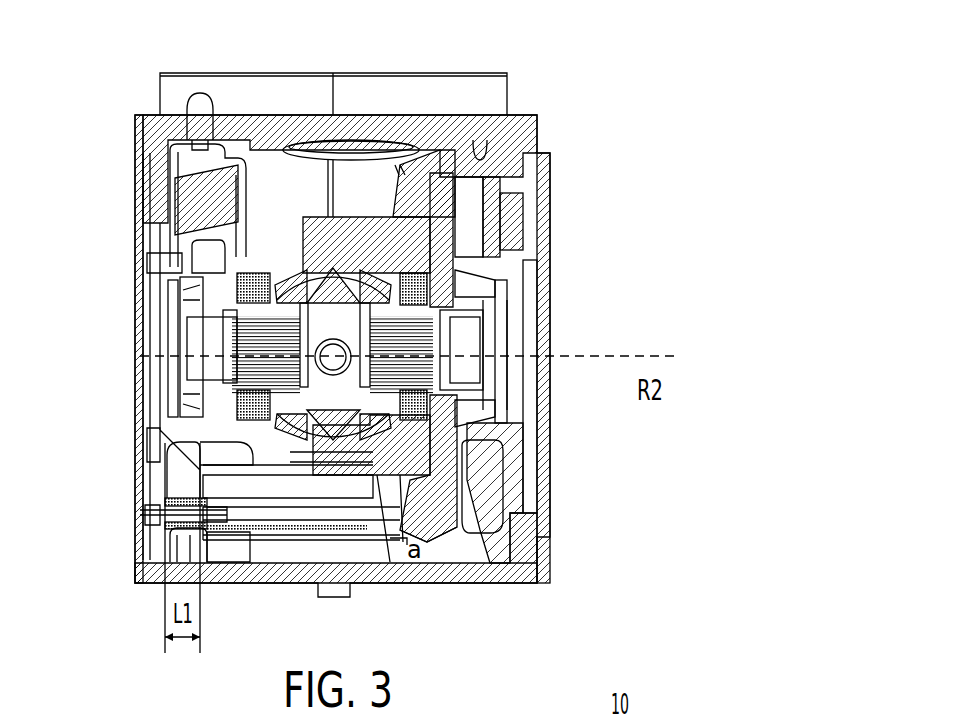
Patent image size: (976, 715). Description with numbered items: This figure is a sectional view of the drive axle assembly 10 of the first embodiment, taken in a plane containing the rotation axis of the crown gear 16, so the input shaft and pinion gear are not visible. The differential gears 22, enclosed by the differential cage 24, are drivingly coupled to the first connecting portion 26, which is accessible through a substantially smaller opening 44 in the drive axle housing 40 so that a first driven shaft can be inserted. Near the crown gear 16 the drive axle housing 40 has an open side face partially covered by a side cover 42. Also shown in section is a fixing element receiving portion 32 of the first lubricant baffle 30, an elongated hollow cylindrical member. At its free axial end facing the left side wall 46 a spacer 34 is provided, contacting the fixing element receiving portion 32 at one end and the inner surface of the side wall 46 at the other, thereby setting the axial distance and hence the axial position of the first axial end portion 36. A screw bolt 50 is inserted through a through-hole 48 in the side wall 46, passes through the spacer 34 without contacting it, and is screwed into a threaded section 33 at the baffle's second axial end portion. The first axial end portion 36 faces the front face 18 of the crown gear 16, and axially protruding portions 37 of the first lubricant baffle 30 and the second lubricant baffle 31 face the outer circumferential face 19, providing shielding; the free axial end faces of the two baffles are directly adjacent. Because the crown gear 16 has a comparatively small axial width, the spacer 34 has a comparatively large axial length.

The drive axle assembly 10 is at (603, 80).
The crown gear 16 is at (440, 190).
The front face 18 is at (398, 165).
The outer circumferential face 19 is at (399, 182).
The differential gears 22 is at (268, 268).
The differential cage 24 is at (415, 248).
The first connecting portion 26 is at (157, 375).
The first lubricant baffle 30 is at (353, 540).
The second lubricant baffle 31 is at (517, 503).
The fixing element receiving portion 32 is at (280, 512).
The threaded section 33 is at (203, 525).
The spacer 34 is at (160, 500).
The first axial end portion 36 is at (397, 540).
The axially protruding portion 37 is at (405, 548).
The drive axle housing 40 is at (498, 122).
The side cover 42 is at (520, 130).
The opening 44 is at (86, 278).
The side wall 46 is at (145, 500).
The through-hole 48 is at (140, 528).
The screw bolt 50 is at (155, 513).